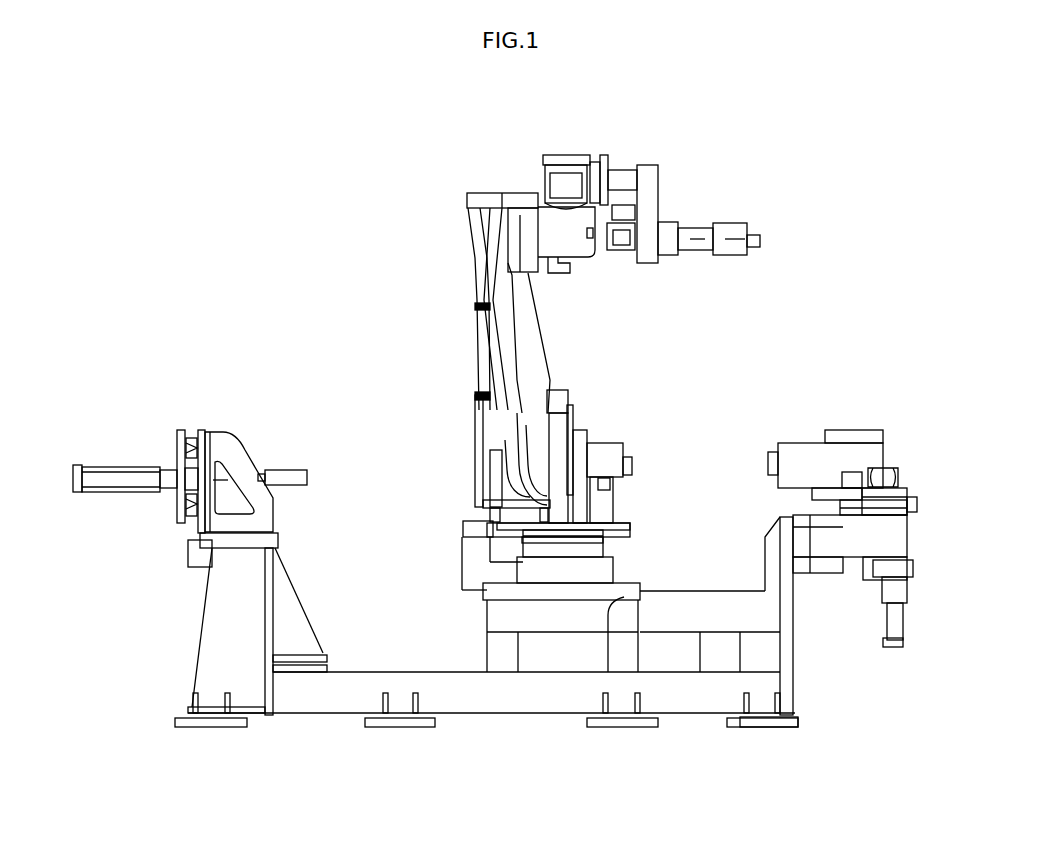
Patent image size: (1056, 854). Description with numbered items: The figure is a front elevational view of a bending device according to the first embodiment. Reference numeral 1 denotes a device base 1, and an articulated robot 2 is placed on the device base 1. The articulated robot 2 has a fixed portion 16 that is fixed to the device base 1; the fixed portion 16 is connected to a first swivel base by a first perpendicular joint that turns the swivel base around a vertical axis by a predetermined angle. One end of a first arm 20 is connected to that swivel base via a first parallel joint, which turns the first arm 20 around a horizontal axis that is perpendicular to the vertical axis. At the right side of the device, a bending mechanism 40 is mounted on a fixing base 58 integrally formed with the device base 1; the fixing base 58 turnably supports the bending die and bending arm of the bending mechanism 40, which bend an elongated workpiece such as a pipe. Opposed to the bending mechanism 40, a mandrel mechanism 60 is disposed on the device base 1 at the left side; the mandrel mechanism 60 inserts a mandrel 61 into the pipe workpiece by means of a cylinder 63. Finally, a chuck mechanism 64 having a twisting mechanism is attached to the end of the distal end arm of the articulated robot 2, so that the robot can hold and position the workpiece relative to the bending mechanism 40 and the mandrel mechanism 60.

The device base 1 is at (553, 700).
The articulated robot 2 is at (455, 225).
The fixed portion 16 is at (583, 548).
The first arm 20 is at (518, 337).
The bending mechanism 40 is at (907, 455).
The fixing base 58 is at (815, 553).
The mandrel mechanism 60 is at (210, 418).
The mandrel 61 is at (287, 470).
The cylinder 63 is at (132, 477).
The chuck mechanism 64 is at (728, 225).